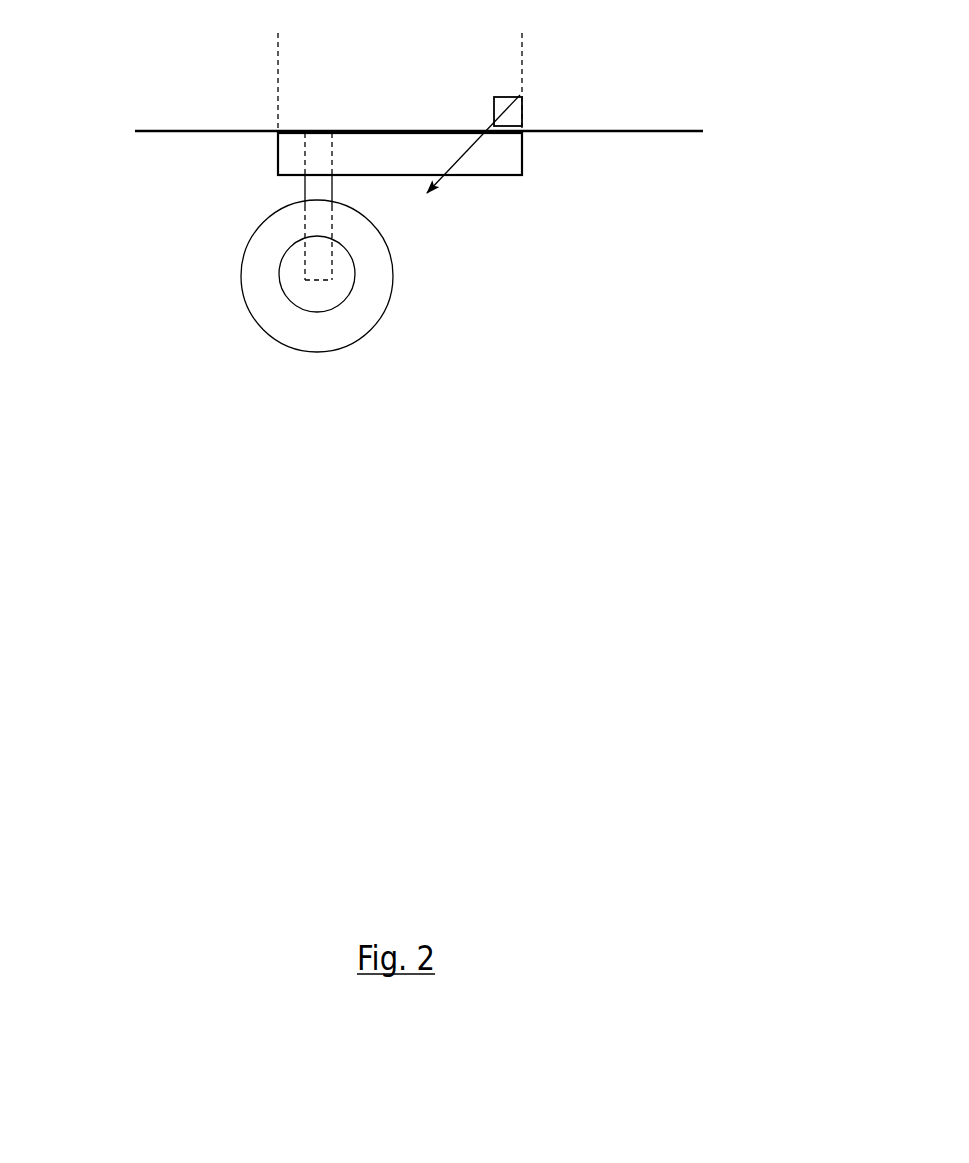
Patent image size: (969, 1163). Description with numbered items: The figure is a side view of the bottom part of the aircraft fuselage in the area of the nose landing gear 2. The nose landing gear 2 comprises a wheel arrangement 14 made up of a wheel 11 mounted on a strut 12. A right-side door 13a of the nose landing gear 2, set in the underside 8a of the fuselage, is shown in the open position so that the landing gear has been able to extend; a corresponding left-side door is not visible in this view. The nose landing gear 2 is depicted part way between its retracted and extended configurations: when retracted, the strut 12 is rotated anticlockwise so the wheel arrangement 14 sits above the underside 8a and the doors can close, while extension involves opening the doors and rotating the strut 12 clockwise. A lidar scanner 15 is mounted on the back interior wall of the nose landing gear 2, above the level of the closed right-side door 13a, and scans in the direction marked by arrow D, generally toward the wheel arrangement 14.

The nose landing gear 2 is at (588, 605).
The underside of the fuselage 8a is at (657, 132).
The wheel 11 is at (363, 307).
The strut 12 is at (318, 192).
The right-side door 13a is at (465, 165).
The wheel arrangement 14 is at (180, 335).
The lidar scanner 15 is at (505, 110).
The scanning direction arrow D is at (461, 165).